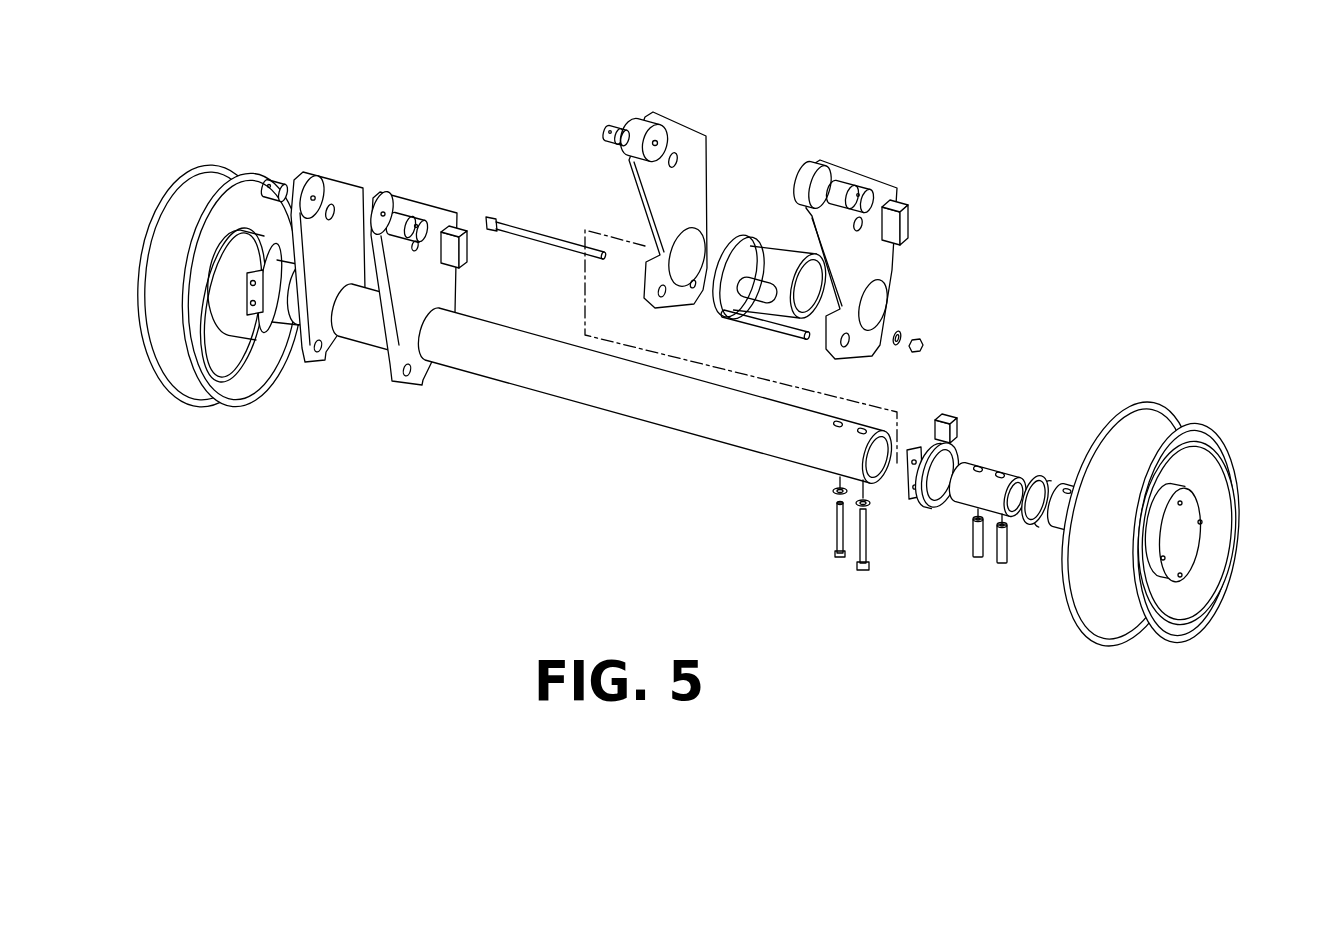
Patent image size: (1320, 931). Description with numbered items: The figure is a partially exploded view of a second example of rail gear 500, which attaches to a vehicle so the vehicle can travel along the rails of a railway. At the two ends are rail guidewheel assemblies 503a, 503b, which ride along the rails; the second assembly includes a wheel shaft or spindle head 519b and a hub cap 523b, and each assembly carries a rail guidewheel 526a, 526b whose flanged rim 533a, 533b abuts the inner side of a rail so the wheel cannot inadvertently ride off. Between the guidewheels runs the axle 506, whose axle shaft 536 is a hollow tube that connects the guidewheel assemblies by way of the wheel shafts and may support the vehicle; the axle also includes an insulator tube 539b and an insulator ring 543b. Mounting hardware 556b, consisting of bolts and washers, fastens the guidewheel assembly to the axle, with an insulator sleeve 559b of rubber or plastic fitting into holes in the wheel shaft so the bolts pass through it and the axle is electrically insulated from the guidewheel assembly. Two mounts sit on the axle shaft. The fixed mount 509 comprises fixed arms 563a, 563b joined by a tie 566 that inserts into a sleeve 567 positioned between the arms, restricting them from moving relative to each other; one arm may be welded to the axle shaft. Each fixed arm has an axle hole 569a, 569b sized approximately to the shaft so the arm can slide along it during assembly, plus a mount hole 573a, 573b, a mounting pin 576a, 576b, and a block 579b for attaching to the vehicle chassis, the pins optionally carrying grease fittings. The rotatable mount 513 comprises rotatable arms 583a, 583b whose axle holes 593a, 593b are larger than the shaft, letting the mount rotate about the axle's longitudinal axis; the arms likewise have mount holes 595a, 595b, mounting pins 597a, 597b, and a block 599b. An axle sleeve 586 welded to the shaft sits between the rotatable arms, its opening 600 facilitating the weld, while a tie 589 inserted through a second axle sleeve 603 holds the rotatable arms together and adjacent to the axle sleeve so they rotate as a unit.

The rail gear 500 is at (1016, 121).
The rail guidewheel assembly 503a is at (165, 365).
The rail guidewheel assembly 503b is at (1070, 613).
The axle 506 is at (605, 398).
The fixed mount 509 is at (449, 72).
The rotatable mount 513 is at (871, 72).
The wheel shaft 519b is at (1070, 485).
The hub cap 523b is at (1182, 538).
The rail guidewheel 526a is at (216, 183).
The rail guidewheel 526b is at (1125, 587).
The flanged rim 533a is at (210, 400).
The flanged rim 533b is at (1143, 407).
The axle shaft 536 is at (700, 400).
The insulator tube 539b is at (923, 508).
The insulator ring 543b is at (1038, 528).
The mounting hardware 556b is at (860, 548).
The insulator sleeve 559b is at (1000, 546).
The fixed arm 563a is at (357, 210).
The fixed arm 563b is at (440, 222).
The tie 566 is at (243, 398).
The sleeve 567 is at (387, 357).
The axle hole 569a is at (347, 357).
The axle hole 569b is at (433, 326).
The mount hole 573a is at (333, 210).
The mount hole 573b is at (414, 250).
The mounting pin 576a is at (276, 181).
The mounting pin 576b is at (412, 220).
The block 579b is at (466, 241).
The rotatable arm 583a is at (700, 134).
The rotatable arm 583b is at (879, 190).
The axle sleeve 586 is at (766, 259).
The tie 589 is at (510, 232).
The axle hole 593a is at (690, 242).
The axle hole 593b is at (872, 300).
The mount hole 595a is at (678, 158).
The mount hole 595b is at (858, 230).
The mounting pin 597a is at (623, 128).
The mounting pin 597b is at (860, 192).
The block 599b is at (906, 215).
The opening 600 is at (750, 292).
The axle sleeve 603 is at (767, 327).